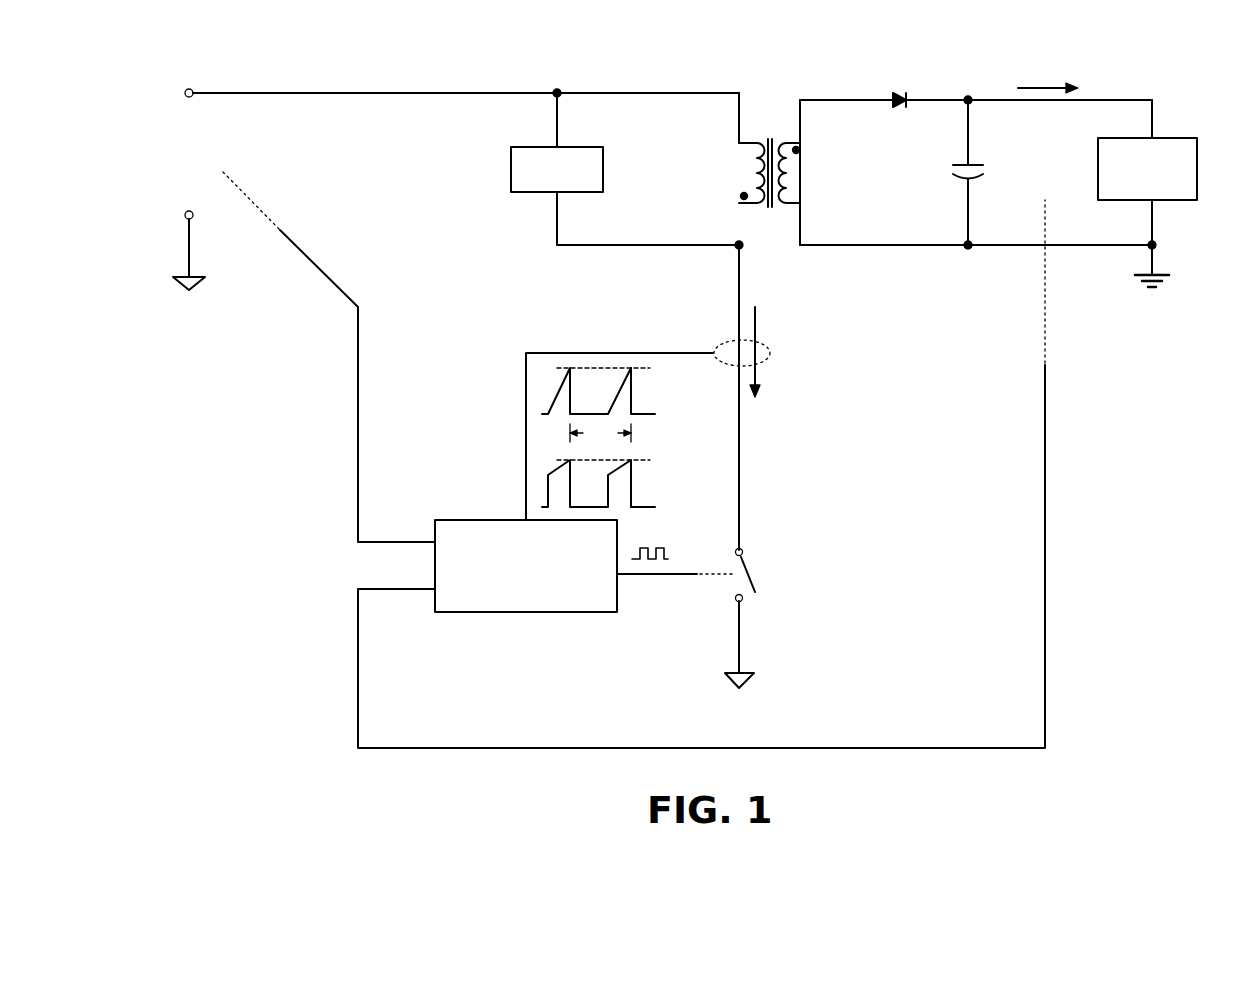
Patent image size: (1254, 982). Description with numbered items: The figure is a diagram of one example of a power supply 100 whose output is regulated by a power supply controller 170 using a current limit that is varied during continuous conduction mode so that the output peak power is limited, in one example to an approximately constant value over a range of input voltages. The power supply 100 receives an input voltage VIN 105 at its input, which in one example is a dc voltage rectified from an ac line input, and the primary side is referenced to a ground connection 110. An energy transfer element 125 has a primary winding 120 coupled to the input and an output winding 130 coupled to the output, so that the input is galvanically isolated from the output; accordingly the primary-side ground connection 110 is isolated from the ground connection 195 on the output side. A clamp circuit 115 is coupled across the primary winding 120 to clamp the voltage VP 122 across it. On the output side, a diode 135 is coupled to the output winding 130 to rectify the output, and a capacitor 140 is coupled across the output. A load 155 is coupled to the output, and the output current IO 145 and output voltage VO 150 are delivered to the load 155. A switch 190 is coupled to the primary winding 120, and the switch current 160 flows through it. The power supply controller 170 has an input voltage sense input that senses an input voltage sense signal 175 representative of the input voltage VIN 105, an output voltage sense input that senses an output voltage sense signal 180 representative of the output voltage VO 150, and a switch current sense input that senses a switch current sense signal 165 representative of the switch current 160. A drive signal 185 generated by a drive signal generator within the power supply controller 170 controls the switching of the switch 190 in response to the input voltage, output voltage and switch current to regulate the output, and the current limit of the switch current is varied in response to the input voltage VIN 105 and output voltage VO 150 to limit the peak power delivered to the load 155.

The power supply 100 is at (406, 179).
The input voltage VIN 105 is at (178, 147).
The ground connection 110 is at (200, 291).
The clamp circuit 115 is at (542, 204).
The primary winding 120 is at (748, 168).
The voltage VP 122 is at (667, 150).
The energy transfer element T1 125 is at (778, 132).
The output winding 130 is at (802, 170).
The diode D1 135 is at (900, 84).
The capacitor C1 140 is at (953, 192).
The output current IO 145 is at (1021, 76).
The output voltage VO 150 is at (1064, 153).
The load 155 is at (1160, 131).
The switch current IS1 160 is at (772, 305).
The switch current sense signal 165 is at (558, 341).
The power supply controller 170 is at (476, 509).
The input voltage sense signal 175 is at (352, 413).
The output voltage sense signal 180 is at (347, 718).
The drive signal 185 is at (676, 563).
The switch S1 190 is at (756, 558).
The ground connection 195 is at (1168, 288).